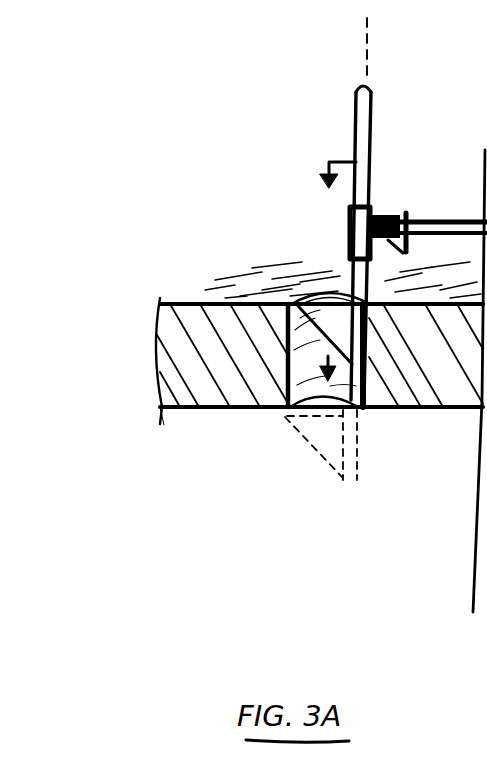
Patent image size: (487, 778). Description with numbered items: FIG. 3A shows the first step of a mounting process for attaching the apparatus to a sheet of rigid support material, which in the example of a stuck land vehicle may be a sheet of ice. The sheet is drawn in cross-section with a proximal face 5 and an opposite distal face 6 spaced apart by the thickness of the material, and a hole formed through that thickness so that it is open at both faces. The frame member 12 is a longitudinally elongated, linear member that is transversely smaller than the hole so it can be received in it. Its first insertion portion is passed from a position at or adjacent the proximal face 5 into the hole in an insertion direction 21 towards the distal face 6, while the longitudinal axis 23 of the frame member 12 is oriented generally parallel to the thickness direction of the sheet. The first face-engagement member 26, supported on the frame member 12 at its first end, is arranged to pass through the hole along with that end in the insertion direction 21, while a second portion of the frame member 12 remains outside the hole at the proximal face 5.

The proximal face 5 is at (205, 303).
The distal face 6 is at (197, 412).
The frame member 12 is at (372, 155).
The insertion direction 21 is at (280, 358).
The longitudinal axis 23 is at (369, 44).
The first face-engagement member 26 is at (336, 298).